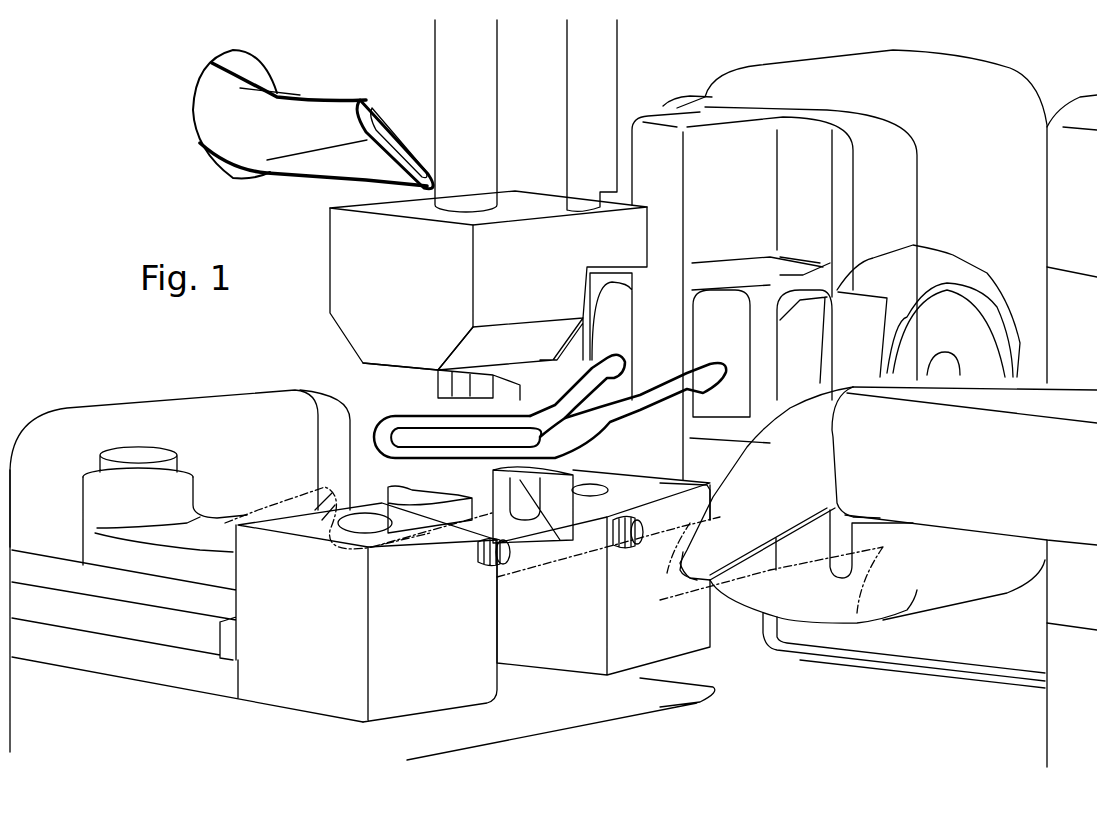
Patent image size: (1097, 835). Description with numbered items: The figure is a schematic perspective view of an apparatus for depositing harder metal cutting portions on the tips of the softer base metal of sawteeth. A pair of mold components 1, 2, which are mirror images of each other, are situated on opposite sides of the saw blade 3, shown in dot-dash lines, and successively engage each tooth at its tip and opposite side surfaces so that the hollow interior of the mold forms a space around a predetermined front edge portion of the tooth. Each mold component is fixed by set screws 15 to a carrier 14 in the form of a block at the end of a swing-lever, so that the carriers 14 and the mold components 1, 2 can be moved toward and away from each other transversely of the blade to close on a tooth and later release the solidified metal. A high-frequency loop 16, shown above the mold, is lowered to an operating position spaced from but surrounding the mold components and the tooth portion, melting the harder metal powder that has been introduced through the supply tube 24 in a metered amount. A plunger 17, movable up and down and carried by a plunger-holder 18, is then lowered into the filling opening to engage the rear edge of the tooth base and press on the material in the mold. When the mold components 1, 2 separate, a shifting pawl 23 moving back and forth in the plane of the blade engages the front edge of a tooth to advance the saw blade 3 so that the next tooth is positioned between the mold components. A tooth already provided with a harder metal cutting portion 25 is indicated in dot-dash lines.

The mold component 1 is at (433, 510).
The mold component 2 is at (547, 500).
The saw blade 3 is at (663, 543).
The carrier 14 is at (312, 698).
The set screw 15 is at (620, 548).
The high-frequency loop 16 is at (366, 408).
The plunger 17 is at (428, 390).
The plunger-holder 18 is at (355, 268).
The shifting pawl 23 is at (737, 523).
The supply tube 24 is at (215, 130).
The harder metal cutting portion 25 is at (322, 500).